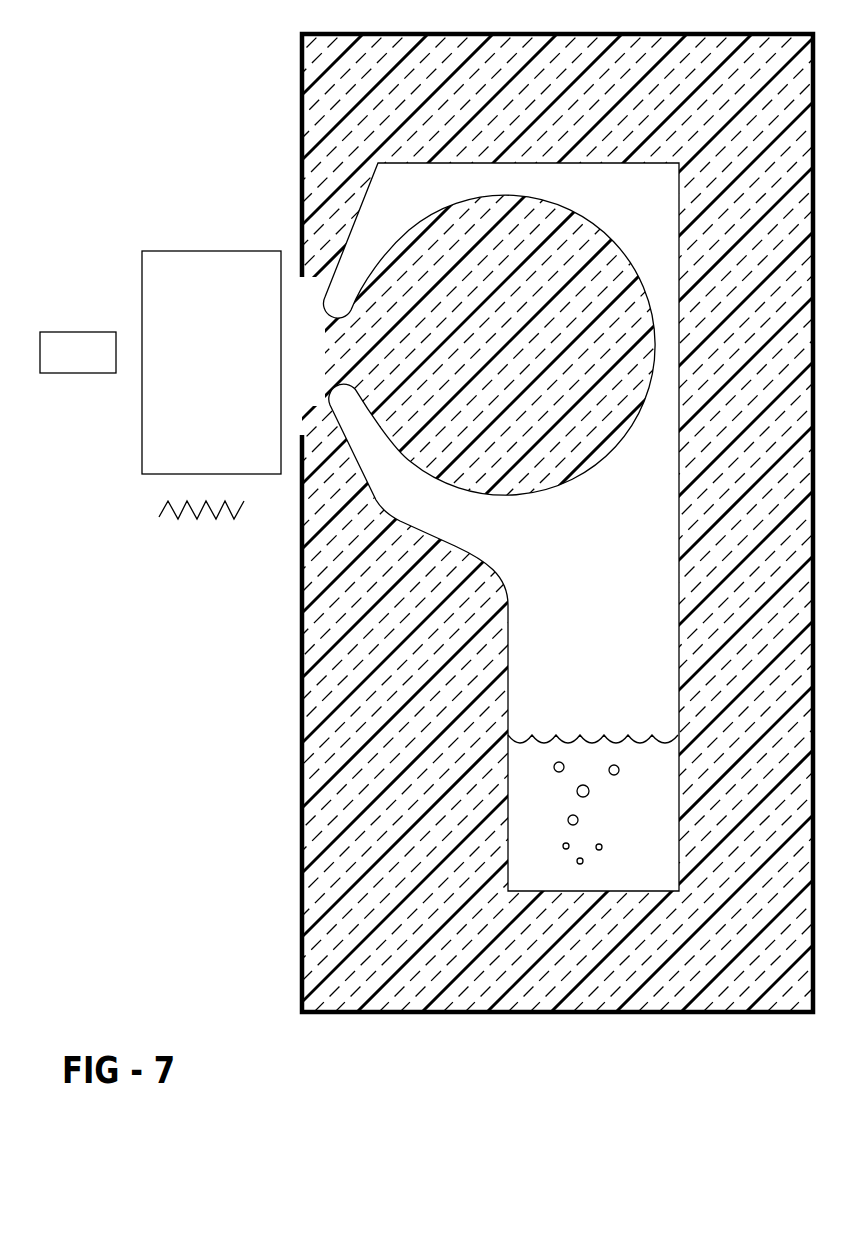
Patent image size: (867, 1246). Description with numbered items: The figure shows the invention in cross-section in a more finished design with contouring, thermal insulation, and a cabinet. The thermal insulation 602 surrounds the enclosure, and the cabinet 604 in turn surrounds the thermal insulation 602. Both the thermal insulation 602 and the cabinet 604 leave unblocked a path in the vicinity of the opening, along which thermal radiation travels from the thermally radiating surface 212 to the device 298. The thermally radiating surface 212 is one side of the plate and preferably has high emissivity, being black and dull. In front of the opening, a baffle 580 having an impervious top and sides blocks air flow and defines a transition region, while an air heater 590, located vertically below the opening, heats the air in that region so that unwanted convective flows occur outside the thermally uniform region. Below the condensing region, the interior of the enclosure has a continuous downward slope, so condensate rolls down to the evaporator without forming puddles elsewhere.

The thermally radiating surface 212 is at (568, 469).
The device 298 is at (86, 373).
The baffle 580 is at (187, 250).
The air heater 590 is at (188, 522).
The thermal insulation 602 is at (340, 787).
The cabinet 604 is at (300, 902).